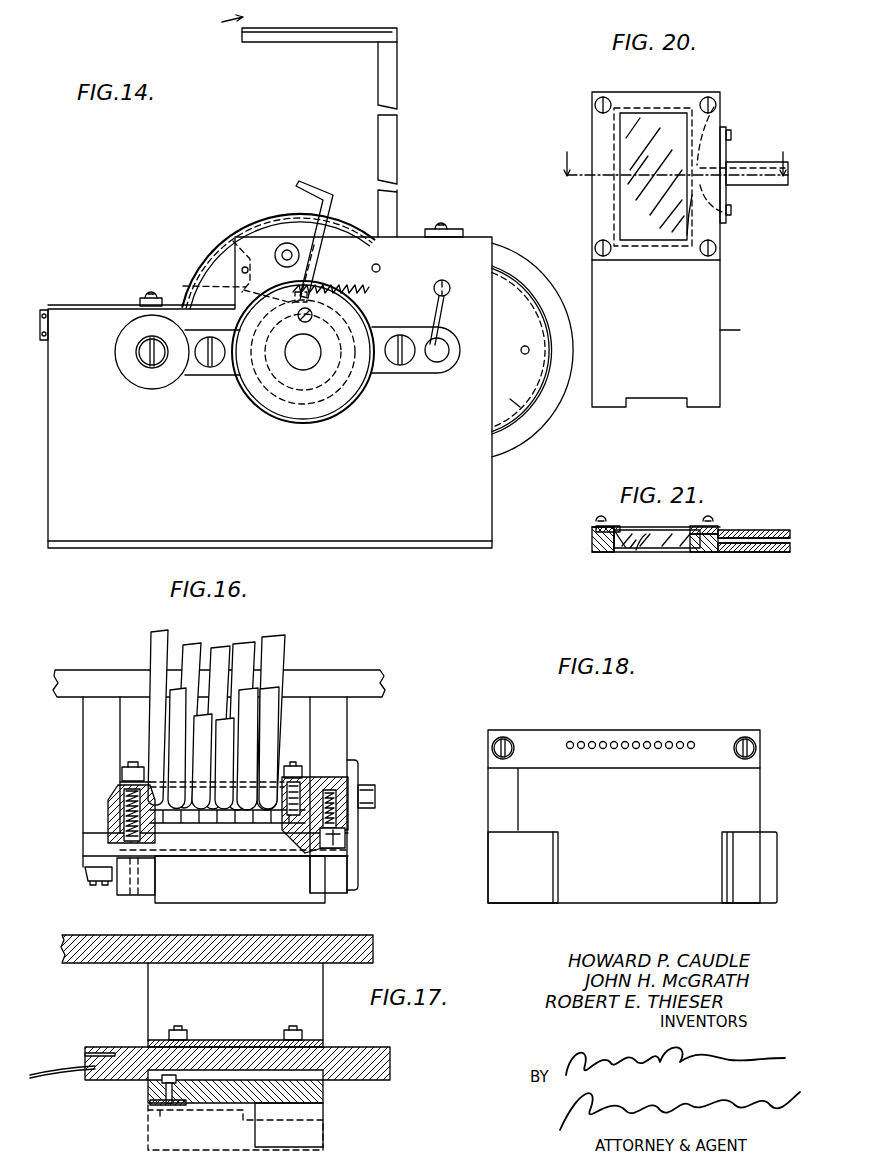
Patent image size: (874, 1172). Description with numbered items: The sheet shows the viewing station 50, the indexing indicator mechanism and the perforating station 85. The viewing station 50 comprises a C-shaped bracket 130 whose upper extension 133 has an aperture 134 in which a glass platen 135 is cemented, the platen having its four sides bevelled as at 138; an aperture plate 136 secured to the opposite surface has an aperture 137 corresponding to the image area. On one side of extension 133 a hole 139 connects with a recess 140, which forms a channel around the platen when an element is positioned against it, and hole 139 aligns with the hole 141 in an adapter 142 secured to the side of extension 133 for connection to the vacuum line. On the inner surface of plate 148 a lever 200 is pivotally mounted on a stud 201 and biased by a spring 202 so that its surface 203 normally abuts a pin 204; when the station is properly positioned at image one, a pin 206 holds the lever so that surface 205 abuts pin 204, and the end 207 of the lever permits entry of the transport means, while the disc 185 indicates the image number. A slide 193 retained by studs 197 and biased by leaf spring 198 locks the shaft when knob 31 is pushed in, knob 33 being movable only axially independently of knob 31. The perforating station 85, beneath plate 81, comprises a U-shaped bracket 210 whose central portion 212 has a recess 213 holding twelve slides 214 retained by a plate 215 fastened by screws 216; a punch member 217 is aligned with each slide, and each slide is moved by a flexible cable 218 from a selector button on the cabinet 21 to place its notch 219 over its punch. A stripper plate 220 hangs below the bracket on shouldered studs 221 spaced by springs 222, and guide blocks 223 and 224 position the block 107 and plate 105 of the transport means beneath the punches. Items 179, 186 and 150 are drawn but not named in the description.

In FIG. 14, the viewing station 50 is at (219, 26).
In FIG. 14, the aperture plate 136 is at (334, 29).
In FIG. 20, the aperture plate 136 is at (593, 121).
In FIG. 21, the aperture plate 136 is at (592, 528).
In FIG. 14, the upper extension 133 is at (298, 38).
In FIG. 20, the upper extension 133 is at (706, 275).
In FIG. 21, the upper extension 133 is at (593, 551).
In FIG. 14, the C-shaped bracket 130 is at (397, 73).
In FIG. 20, the C-shaped bracket 130 is at (748, 331).
In FIG. 14, the end of lever 207 is at (323, 172).
In FIG. 14, the lever 200 is at (293, 213).
In FIG. 14, the surface of lever 203 is at (236, 246).
In FIG. 14, the pin 204 is at (242, 270).
In FIG. 14, the surface of lever 205 is at (246, 287).
In FIG. 14, the screw 179 is at (137, 300).
In FIG. 14, the stud 201 is at (300, 256).
In FIG. 14, the spring 202 is at (378, 266).
In FIG. 14, the pin 206 is at (332, 288).
In FIG. 14, the leaf spring 198 is at (441, 313).
In FIG. 14, the disc 185 is at (499, 249).
In FIG. 14, the dial rim 186 is at (513, 400).
In FIG. 14, the knob 33 is at (138, 376).
In FIG. 14, the studs 197 is at (201, 360).
In FIG. 14, the slide 193 is at (217, 371).
In FIG. 14, the knob 31 is at (301, 411).
In FIG. 14, the plate 148 is at (491, 478).
In FIG. 14, the frame base 150 is at (421, 548).
In FIG. 20, the glass platen 135 is at (651, 112).
In FIG. 21, the glass platen 135 is at (650, 542).
In FIG. 20, the cabinet 21 is at (677, 151).
In FIG. 20, the recess 140 is at (716, 112).
In FIG. 21, the recess 140 is at (700, 550).
In FIG. 20, the adapter 142 is at (745, 162).
In FIG. 21, the adapter 142 is at (782, 553).
In FIG. 20, the aperture 134 is at (617, 200).
In FIG. 21, the aperture 134 is at (637, 550).
In FIG. 20, the hole 141 is at (738, 182).
In FIG. 21, the hole 141 is at (730, 545).
In FIG. 20, the hole 139 is at (727, 201).
In FIG. 21, the hole 139 is at (720, 532).
In FIG. 20, the aperture 137 is at (690, 226).
In FIG. 21, the aperture 137 is at (692, 527).
In FIG. 21, the bevel 138 is at (616, 549).
In FIG. 16, the flexible cable 218 is at (150, 650).
In FIG. 17, the flexible cable 218 is at (42, 1074).
In FIG. 16, the plate 81 is at (366, 672).
In FIG. 17, the plate 81 is at (352, 934).
In FIG. 16, the screws 216 is at (127, 768).
In FIG. 17, the screws 216 is at (175, 1030).
In FIG. 16, the plate 215 is at (121, 782).
In FIG. 17, the plate 215 is at (235, 1040).
In FIG. 16, the springs 222 is at (110, 806).
In FIG. 16, the stripper plate 220 is at (84, 846).
In FIG. 16, the guide block 223 is at (113, 886).
In FIG. 18, the guide block 223 is at (533, 895).
In FIG. 17, the guide block 223 is at (318, 1134).
In FIG. 16, the slides 214 is at (176, 822).
In FIG. 17, the slides 214 is at (380, 1047).
In FIG. 16, the block 107 is at (203, 892).
In FIG. 17, the block 107 is at (148, 1140).
In FIG. 16, the central portion 212 is at (302, 852).
In FIG. 17, the central portion 212 is at (318, 1093).
In FIG. 16, the U-shaped bracket 210 is at (348, 736).
In FIG. 18, the U-shaped bracket 210 is at (537, 729).
In FIG. 17, the U-shaped bracket 210 is at (148, 982).
In FIG. 16, the recess 213 is at (287, 766).
In FIG. 16, the perforating station 85 is at (352, 783).
In FIG. 16, the shouldered studs 221 is at (346, 838).
In FIG. 16, the guide block 224 is at (350, 880).
In FIG. 18, the guide block 224 is at (741, 895).
In FIG. 18, the punch member 217 is at (629, 742).
In FIG. 17, the punch member 217 is at (162, 1095).
In FIG. 17, the notch 219 is at (145, 1070).
In FIG. 17, the plate 105 is at (150, 1108).